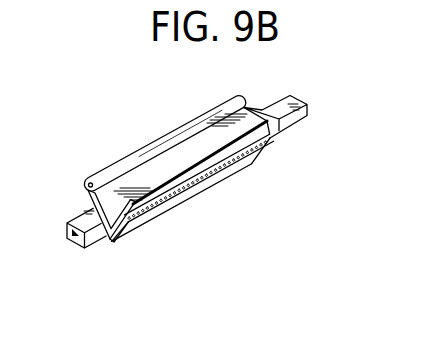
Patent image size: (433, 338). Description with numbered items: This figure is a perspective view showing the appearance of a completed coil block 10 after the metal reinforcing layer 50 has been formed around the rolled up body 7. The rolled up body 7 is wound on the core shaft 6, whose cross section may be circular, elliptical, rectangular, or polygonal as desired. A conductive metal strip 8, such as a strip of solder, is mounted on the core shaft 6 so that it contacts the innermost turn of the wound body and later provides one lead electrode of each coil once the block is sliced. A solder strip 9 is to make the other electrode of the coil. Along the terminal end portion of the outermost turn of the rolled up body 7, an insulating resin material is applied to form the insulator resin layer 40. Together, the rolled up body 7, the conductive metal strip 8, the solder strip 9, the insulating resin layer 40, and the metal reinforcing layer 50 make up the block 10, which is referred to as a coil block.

The block 10 is at (251, 179).
The insulator resin layer 40 is at (195, 190).
The core shaft 6 is at (284, 106).
The conductive metal strip 8 is at (88, 240).
The rolled up body 7 is at (90, 202).
The solder strip 9 is at (88, 185).
The metal reinforcing layer 50 is at (103, 243).